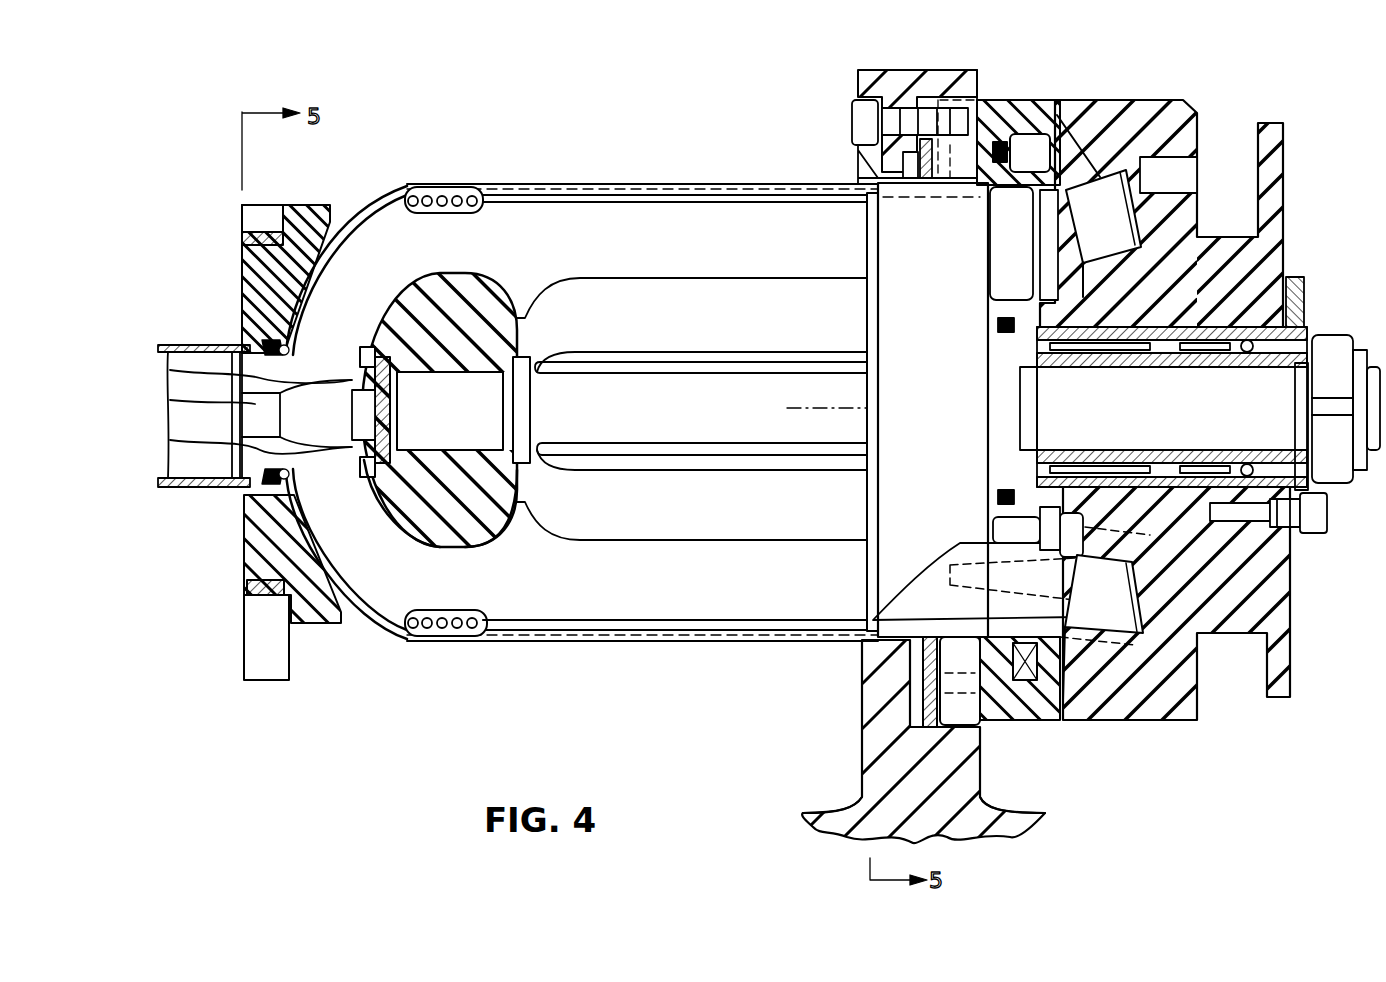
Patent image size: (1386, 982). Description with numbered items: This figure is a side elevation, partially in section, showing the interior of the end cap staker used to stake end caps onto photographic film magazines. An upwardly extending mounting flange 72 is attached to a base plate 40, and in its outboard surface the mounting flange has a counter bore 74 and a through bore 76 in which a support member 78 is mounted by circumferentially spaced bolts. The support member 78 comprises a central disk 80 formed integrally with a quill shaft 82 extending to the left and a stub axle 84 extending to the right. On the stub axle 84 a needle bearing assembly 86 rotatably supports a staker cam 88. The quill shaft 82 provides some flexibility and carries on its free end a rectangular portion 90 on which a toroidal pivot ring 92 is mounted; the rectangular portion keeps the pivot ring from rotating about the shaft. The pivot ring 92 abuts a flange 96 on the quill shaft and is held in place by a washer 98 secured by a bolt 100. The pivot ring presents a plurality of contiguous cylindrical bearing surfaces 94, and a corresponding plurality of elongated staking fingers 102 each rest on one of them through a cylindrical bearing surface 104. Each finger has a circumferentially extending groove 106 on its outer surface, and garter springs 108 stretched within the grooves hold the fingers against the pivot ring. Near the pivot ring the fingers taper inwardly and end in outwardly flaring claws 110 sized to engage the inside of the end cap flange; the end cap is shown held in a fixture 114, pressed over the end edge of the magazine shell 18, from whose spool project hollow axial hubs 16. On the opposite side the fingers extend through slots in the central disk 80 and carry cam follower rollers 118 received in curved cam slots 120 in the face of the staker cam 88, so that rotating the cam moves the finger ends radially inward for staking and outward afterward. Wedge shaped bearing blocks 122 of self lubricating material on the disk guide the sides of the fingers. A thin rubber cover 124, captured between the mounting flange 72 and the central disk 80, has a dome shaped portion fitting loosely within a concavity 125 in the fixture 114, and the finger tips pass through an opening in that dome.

The hollow axial hub 16 is at (240, 412).
The preformed metal shell 18 is at (232, 488).
The base plate 40 is at (1010, 830).
The mounting flange 72 is at (923, 70).
The counter bore 74 is at (950, 90).
The through bore 76 is at (880, 174).
The support member 78 is at (917, 364).
The central disk 80 is at (862, 240).
The quill shaft 82 is at (668, 416).
The stub axle 84 is at (1104, 419).
The needle bearing assembly 86 is at (1291, 322).
The staker cam 88 is at (1263, 250).
The rectangular portion 90 is at (438, 431).
The pivot ring 92 is at (477, 525).
The bearing surface 94 is at (425, 546).
The flange 96 is at (535, 460).
The washer 98 is at (242, 378).
The bolt 100 is at (235, 443).
The staking finger 102 is at (625, 249).
The cylindrical bearing surface 104 is at (474, 278).
The circumferentially extending groove 106 is at (446, 214).
The garter spring 108 is at (441, 191).
The claw 110 is at (285, 345).
The fixture 114 is at (248, 260).
The cam follower roller 118 is at (1097, 170).
The cam slot 120 is at (1160, 185).
The bearing block 122 is at (1033, 250).
The rubber cover 124 is at (541, 184).
The concavity 125 is at (315, 222).